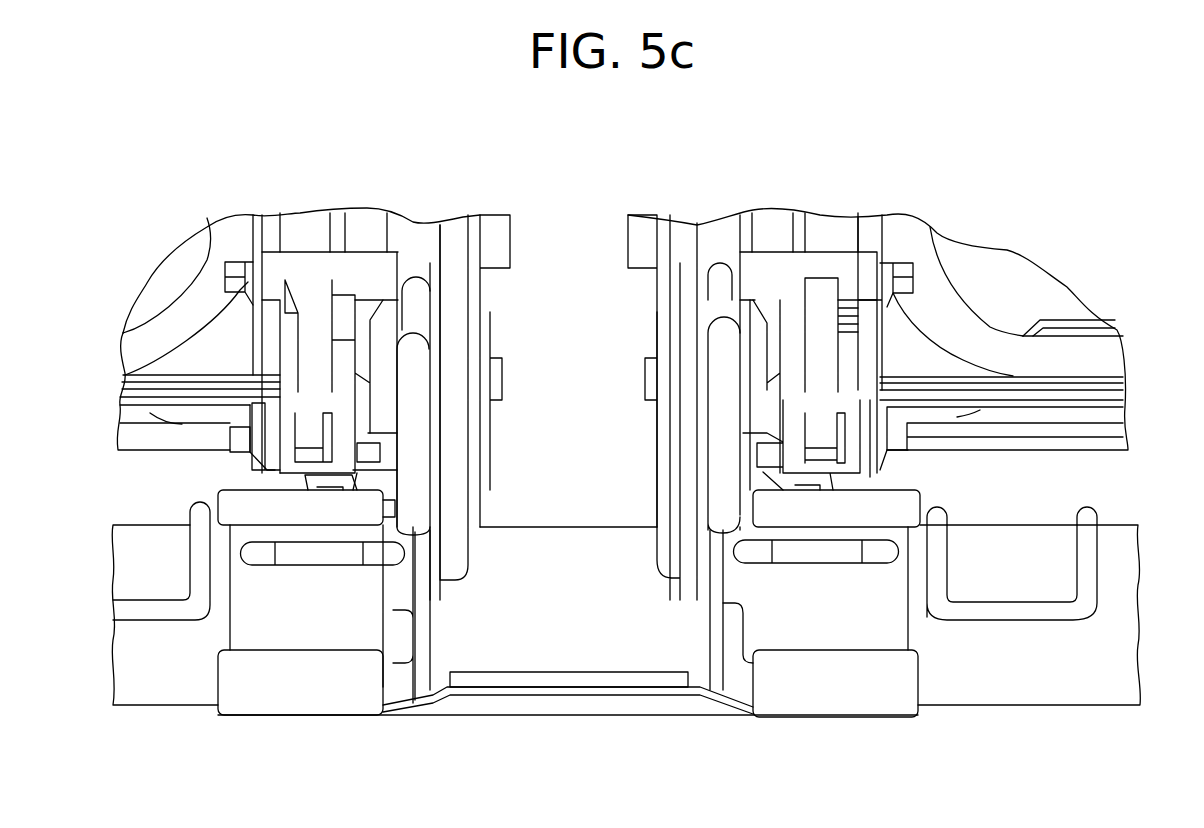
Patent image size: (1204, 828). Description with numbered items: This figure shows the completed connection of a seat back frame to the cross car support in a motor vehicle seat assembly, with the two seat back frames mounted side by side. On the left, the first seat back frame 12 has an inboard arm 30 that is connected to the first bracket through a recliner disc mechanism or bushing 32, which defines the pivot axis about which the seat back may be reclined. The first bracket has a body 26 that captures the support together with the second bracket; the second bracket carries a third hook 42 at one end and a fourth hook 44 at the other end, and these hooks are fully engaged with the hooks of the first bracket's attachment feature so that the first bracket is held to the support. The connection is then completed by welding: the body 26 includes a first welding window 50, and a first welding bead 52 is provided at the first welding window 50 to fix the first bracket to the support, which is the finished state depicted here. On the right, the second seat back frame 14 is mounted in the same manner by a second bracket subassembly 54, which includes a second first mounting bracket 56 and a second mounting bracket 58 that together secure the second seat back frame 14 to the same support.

The first seat back frame 12 is at (193, 292).
The second seat back frame 14 is at (908, 237).
The body 26 is at (292, 620).
The inboard arm 30 is at (455, 250).
The bushing 32 is at (417, 348).
The third hook 42 is at (223, 498).
The fourth hook 44 is at (252, 690).
The first welding window 50 is at (252, 551).
The first welding bead 52 is at (300, 545).
The second bracket subassembly 54 is at (990, 492).
The second first mounting bracket 56 is at (800, 620).
The second mounting bracket 58 is at (893, 503).